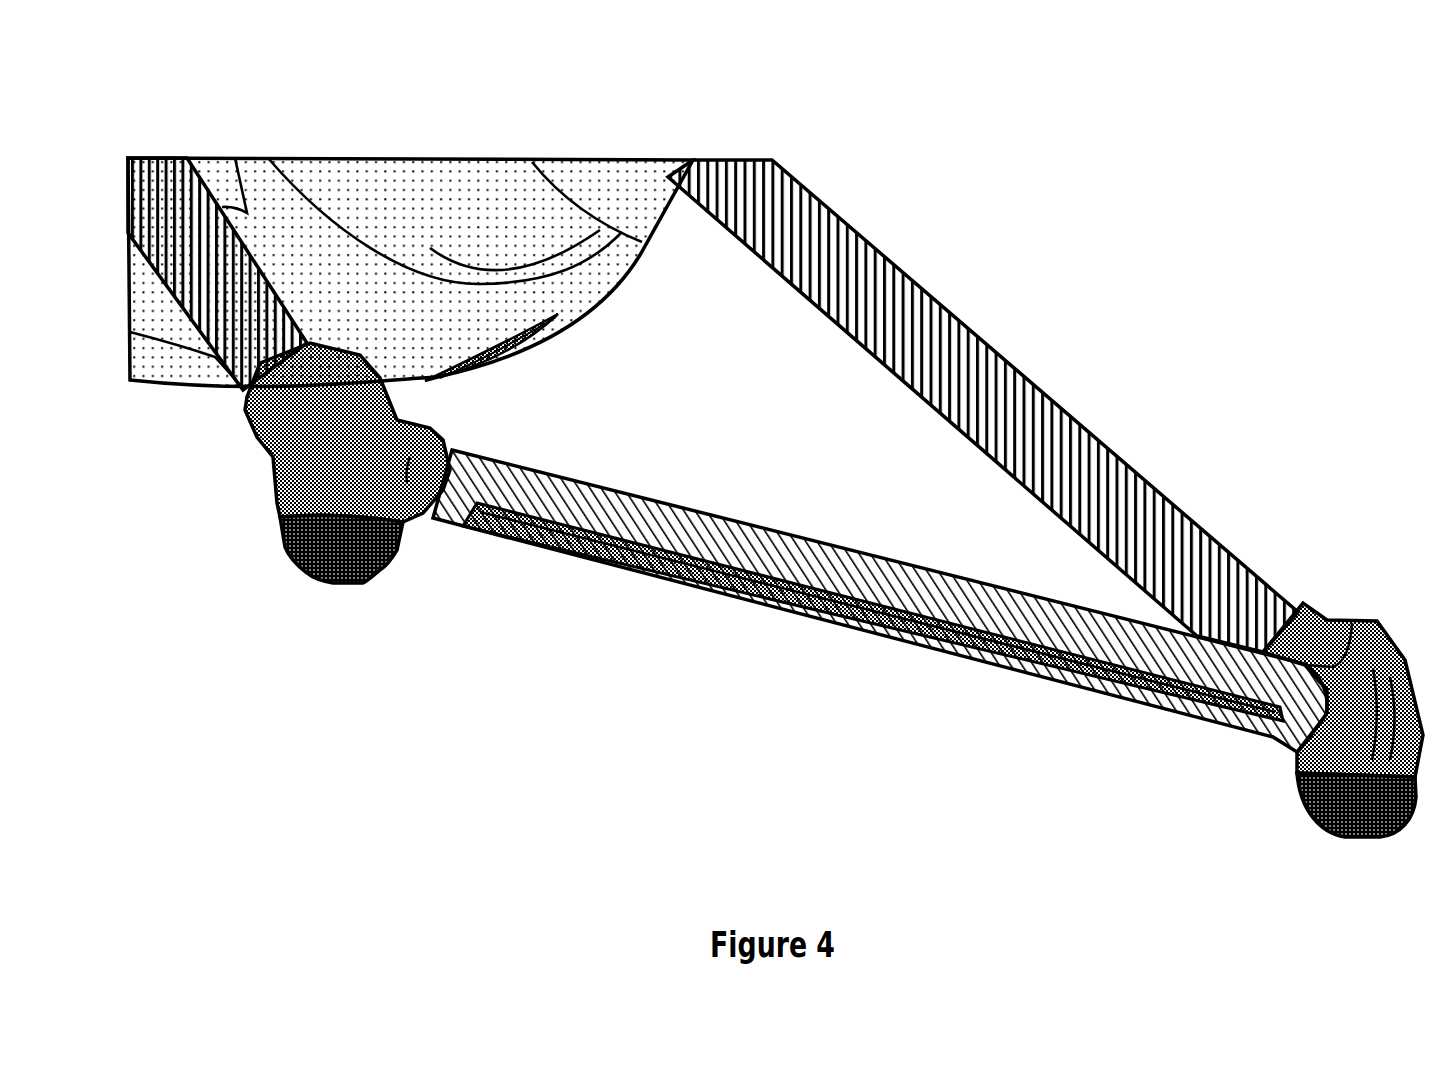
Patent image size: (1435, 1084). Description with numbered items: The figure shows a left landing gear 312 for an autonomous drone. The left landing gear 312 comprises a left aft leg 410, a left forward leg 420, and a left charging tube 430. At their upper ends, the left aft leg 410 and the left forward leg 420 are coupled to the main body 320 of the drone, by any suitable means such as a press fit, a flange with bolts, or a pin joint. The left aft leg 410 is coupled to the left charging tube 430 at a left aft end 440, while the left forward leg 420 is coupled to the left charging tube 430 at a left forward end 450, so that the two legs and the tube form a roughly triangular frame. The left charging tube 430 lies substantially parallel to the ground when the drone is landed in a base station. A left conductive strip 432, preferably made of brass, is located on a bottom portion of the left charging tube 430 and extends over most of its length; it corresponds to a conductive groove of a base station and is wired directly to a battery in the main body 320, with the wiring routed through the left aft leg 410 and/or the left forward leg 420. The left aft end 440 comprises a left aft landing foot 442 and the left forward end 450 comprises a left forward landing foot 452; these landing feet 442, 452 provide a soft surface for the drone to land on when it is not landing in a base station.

The left landing gear 312 is at (177, 135).
The main body 320 is at (538, 293).
The left aft leg 410 is at (215, 297).
The left forward leg 420 is at (1132, 508).
The left charging tube 430 is at (715, 540).
The left conductive strip 432 is at (705, 598).
The left aft end 440 is at (295, 440).
The left aft landing foot 442 is at (322, 550).
The left forward end 450 is at (1338, 707).
The left forward landing foot 452 is at (1327, 787).